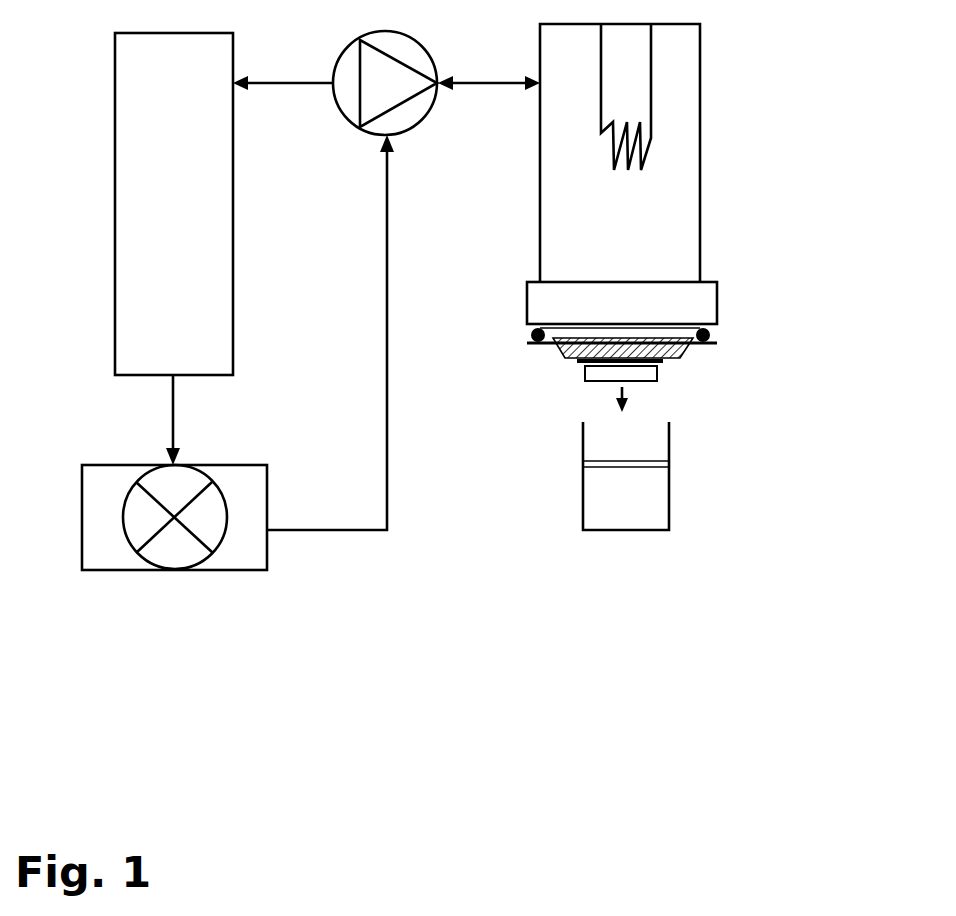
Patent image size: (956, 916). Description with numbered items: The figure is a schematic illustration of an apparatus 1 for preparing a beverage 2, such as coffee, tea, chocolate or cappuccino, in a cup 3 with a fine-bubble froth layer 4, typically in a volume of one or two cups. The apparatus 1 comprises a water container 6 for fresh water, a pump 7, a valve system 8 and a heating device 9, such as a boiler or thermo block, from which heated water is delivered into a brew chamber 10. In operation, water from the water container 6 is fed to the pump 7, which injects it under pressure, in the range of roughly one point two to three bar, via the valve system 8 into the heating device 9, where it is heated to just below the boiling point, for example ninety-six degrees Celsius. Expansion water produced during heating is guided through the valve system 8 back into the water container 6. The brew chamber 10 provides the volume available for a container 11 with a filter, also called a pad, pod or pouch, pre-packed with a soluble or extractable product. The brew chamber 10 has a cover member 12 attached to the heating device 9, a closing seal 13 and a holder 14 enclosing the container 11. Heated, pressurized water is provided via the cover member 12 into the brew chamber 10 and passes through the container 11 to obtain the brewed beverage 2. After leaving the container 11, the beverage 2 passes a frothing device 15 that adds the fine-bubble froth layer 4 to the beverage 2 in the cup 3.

The apparatus 1 is at (806, 425).
The beverage 2 is at (618, 515).
The cup 3 is at (550, 494).
The fine-bubble froth layer 4 is at (669, 462).
The water container 6 is at (163, 219).
The pump 7 is at (82, 513).
The valve system 8 is at (412, 128).
The heating device 9 is at (540, 203).
The brew chamber 10 is at (735, 310).
The container 11 is at (683, 357).
The cover member 12 is at (527, 300).
The closing seal 13 is at (538, 336).
The holder 14 is at (577, 361).
The frothing device 15 is at (585, 381).